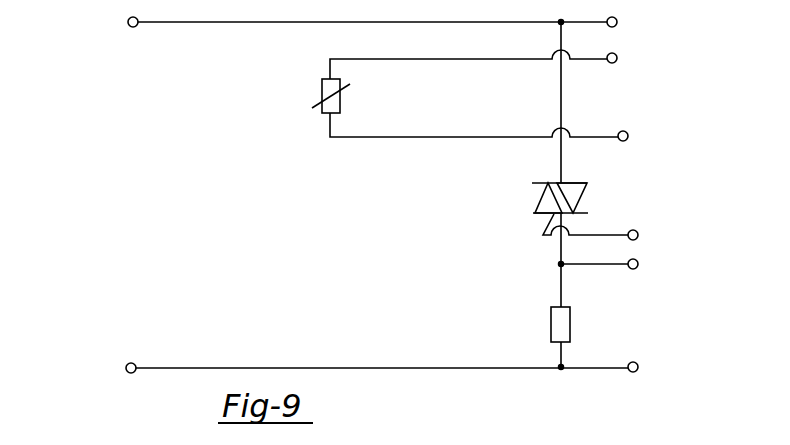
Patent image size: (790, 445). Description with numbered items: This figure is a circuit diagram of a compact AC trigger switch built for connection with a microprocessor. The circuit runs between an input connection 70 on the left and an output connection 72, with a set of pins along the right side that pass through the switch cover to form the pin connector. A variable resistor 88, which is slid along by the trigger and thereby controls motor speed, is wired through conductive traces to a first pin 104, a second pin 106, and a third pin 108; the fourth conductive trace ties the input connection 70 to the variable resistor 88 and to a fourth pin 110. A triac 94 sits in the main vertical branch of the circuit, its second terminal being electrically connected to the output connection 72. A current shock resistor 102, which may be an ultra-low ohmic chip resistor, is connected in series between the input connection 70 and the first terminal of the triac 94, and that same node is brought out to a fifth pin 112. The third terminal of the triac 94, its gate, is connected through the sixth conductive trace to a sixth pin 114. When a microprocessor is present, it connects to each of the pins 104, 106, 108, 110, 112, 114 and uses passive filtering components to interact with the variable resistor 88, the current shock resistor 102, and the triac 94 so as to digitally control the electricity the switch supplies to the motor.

The output connection 72 is at (128, 21).
The input connection 70 is at (126, 366).
The second pin 106 is at (617, 22).
The first pin 104 is at (617, 58).
The third pin 108 is at (628, 136).
The variable resistor 88 is at (322, 93).
The triac 94 is at (584, 199).
The sixth pin 114 is at (638, 235).
The fifth pin 112 is at (638, 264).
The current shock resistor 102 is at (570, 324).
The fourth pin 110 is at (638, 367).